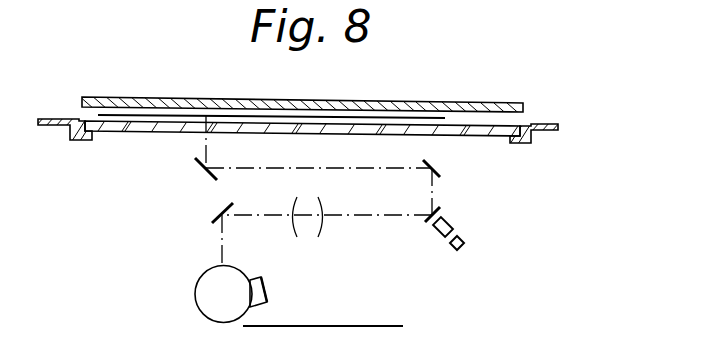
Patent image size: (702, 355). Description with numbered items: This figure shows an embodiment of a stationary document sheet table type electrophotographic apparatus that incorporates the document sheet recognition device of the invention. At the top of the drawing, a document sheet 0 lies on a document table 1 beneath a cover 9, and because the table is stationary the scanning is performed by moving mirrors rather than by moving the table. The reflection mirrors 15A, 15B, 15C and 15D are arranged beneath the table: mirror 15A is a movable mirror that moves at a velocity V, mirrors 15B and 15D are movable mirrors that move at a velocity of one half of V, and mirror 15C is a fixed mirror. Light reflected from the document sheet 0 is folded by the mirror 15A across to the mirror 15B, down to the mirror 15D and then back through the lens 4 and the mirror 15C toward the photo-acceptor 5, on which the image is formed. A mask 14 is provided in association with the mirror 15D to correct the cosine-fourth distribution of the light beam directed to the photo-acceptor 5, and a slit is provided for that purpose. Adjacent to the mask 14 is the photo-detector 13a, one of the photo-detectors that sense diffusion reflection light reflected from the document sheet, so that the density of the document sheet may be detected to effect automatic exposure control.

The original document 0 is at (312, 107).
The platen cover 9 is at (473, 102).
The platen glass 1 is at (485, 137).
The movable mirror 15A is at (196, 171).
The movable mirror 15B is at (438, 176).
The fixed mirror 15C is at (210, 222).
The movable mirror 15D is at (427, 225).
The lens 4 is at (308, 230).
The mask 14 is at (455, 222).
The first photo-detector 13a is at (463, 249).
The photo-acceptor 5 is at (200, 308).